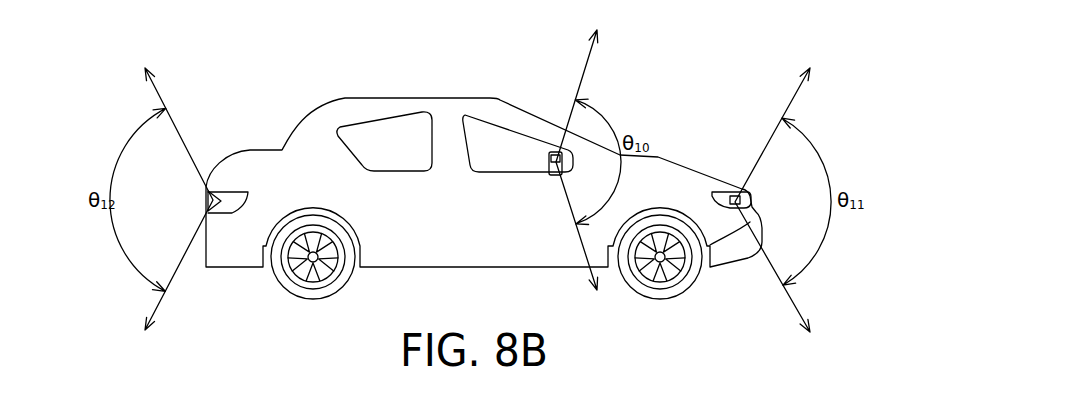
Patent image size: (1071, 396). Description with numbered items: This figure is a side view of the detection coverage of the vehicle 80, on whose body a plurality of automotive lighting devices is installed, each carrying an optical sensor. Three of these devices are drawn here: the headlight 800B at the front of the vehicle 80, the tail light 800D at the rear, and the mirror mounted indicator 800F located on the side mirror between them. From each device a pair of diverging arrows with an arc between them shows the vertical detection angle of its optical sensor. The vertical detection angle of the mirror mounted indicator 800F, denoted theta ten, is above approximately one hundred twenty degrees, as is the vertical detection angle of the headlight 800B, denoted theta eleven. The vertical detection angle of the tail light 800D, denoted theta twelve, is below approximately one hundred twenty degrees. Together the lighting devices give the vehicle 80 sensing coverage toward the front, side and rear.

The vehicle 80 is at (104, 57).
The tail light 800D is at (229, 200).
The mirror mounted indicator 800F is at (547, 160).
The headlight 800B is at (728, 198).